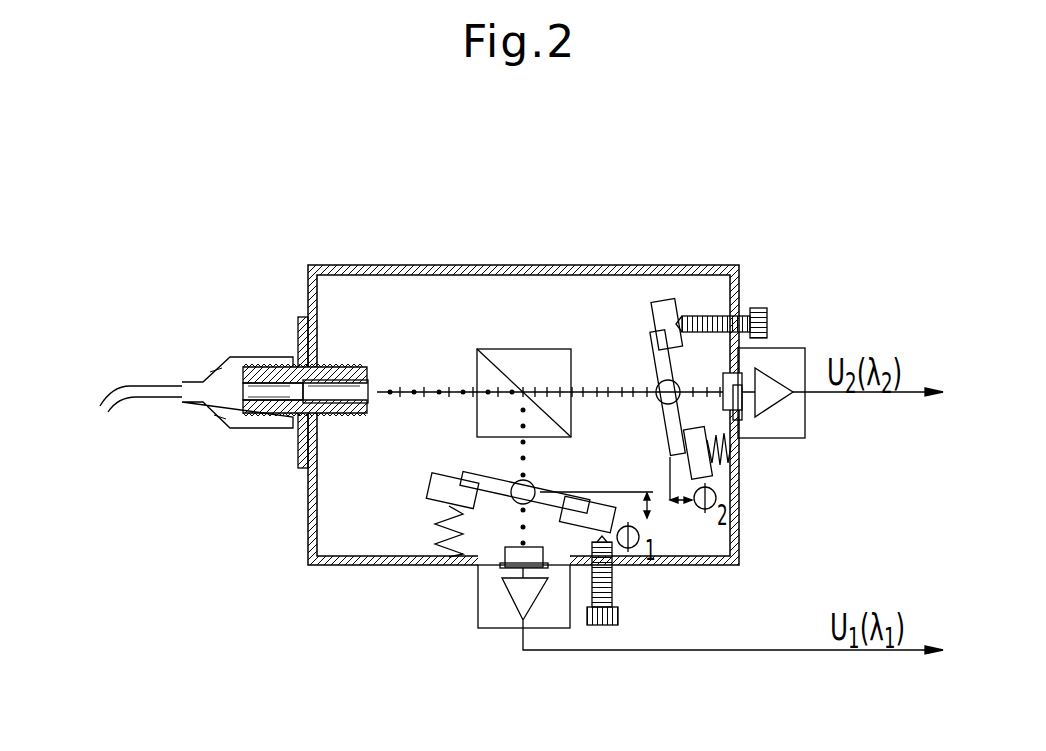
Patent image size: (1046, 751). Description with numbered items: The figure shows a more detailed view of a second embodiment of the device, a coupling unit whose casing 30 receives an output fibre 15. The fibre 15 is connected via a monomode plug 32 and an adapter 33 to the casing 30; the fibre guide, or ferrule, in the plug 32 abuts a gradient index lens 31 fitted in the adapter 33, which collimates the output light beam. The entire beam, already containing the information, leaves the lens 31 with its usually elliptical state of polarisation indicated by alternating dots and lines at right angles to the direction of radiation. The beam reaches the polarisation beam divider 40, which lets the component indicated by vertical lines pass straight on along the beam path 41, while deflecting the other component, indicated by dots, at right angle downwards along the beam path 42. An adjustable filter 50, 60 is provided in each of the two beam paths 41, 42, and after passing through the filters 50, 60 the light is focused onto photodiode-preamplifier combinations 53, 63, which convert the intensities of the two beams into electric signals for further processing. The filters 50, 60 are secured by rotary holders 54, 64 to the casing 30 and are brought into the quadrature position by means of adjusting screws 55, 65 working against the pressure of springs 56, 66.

The fibre 15 is at (133, 383).
The casing of the coupling unit 30 is at (340, 267).
The gradient index lens 31 is at (362, 385).
The monomode plug 32 is at (222, 360).
The adapter 33 is at (297, 318).
The polarisation beam divider 40 is at (500, 348).
The beam path 41 is at (611, 397).
The beam path 42 is at (530, 458).
The filter 50 is at (652, 367).
The photodiode-preamplifier combination 53 is at (777, 440).
The rotary holder 54 is at (672, 390).
The adjusting screw 55 is at (768, 310).
The spring 56 is at (720, 462).
The filter 60 is at (472, 475).
The photodiode-preamplifier combination 63 is at (477, 607).
The rotary holder 64 is at (596, 487).
The adjusting screw 65 is at (597, 627).
The spring 66 is at (437, 545).